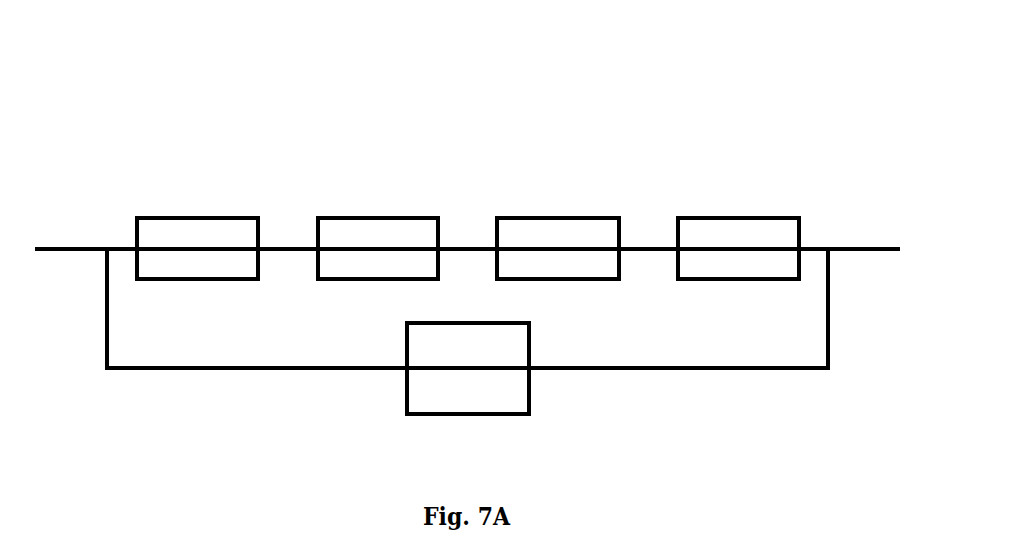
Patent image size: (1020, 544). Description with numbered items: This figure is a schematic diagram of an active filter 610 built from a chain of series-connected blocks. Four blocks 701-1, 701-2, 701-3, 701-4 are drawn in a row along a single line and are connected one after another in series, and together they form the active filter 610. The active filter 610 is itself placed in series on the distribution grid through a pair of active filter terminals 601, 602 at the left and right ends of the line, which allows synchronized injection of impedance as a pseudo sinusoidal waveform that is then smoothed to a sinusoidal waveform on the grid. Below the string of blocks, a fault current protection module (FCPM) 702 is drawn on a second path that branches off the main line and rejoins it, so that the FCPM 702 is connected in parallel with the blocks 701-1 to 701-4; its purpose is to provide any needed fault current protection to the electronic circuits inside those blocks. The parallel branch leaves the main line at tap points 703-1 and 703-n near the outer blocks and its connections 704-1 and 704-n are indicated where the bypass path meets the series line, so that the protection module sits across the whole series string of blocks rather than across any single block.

The active filter 610 is at (410, 95).
The active filter terminal 601 is at (93, 249).
The active filter terminal 602 is at (852, 249).
The block 701-1 is at (197, 218).
The block 701-2 is at (377, 218).
The block 701-3 is at (558, 218).
The block 701-4 is at (737, 218).
The fault current protection module (FCPM) 702 is at (483, 414).
The first tap coupler 703-1 is at (128, 250).
The first feedback connection 704-1 is at (258, 250).
The n-th tap coupler 703-n is at (672, 250).
The n-th feedback connection 704-n is at (807, 250).